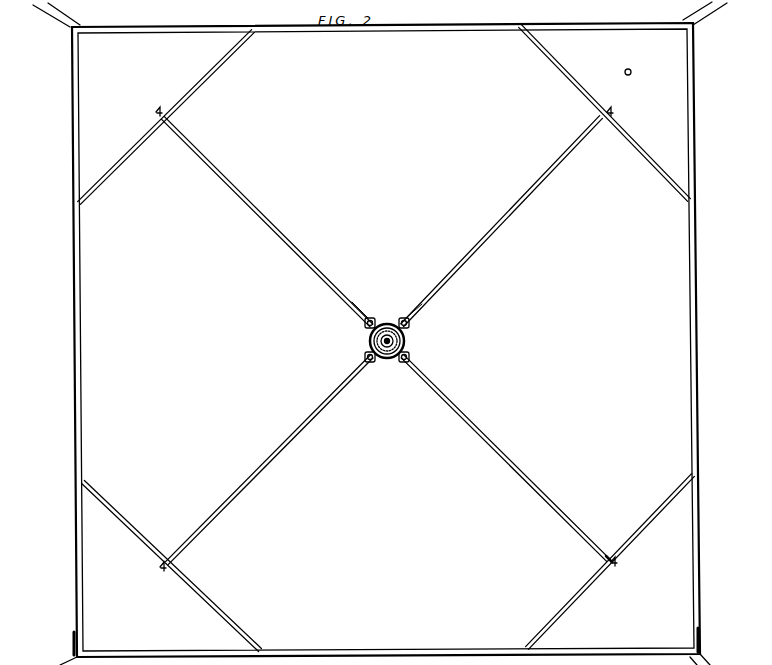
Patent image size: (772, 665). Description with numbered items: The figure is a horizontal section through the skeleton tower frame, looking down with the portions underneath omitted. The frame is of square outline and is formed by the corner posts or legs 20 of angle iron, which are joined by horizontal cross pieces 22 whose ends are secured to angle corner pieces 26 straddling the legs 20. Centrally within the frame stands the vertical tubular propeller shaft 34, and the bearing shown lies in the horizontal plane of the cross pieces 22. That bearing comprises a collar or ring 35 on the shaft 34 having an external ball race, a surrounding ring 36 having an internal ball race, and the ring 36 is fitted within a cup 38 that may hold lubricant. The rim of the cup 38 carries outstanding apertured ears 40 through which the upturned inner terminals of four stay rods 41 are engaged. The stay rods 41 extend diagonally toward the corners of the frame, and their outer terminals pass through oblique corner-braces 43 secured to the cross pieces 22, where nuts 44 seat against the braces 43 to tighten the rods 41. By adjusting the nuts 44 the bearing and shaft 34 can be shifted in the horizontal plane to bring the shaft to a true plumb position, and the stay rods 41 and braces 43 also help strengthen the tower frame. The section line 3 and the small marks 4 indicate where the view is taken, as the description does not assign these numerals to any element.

The diagonal strut 3 is at (422, 313).
The strut end 4 is at (386, 339).
The corner posts or legs 20 is at (58, 23).
The cross pieces 22 is at (690, 367).
The angle corner pieces 26 is at (74, 637).
The propeller shaft 34 is at (407, 340).
The collar or ring 35 is at (372, 337).
The ring 36 is at (367, 348).
The cup 38 is at (410, 350).
The apertured ears 40 is at (402, 367).
The stay rods 41 is at (427, 297).
The oblique corner-braces 43 is at (212, 605).
The nuts 44 is at (618, 563).